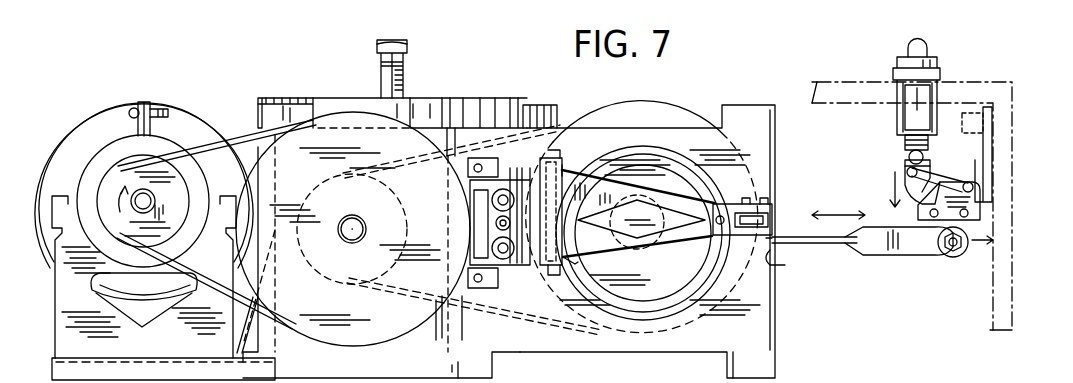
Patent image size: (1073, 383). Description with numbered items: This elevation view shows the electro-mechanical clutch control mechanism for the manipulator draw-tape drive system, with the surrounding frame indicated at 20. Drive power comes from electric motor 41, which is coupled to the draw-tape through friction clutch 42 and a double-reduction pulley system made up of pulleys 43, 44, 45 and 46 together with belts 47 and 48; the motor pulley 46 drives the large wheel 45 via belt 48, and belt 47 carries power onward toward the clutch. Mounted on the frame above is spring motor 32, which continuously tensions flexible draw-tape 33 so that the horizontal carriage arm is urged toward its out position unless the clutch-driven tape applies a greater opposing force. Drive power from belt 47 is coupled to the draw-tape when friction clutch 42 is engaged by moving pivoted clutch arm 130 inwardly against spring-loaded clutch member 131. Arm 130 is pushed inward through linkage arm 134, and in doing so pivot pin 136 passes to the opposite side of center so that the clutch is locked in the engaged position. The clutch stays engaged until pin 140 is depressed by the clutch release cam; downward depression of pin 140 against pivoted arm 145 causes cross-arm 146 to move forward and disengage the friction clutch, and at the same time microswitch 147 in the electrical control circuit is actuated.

The frame 20 is at (1005, 308).
The spring motor 32 is at (455, 108).
The flexible draw-tape 33 is at (538, 110).
The electric motor 41 is at (93, 115).
The friction clutch 42 is at (655, 165).
The pulley 43 is at (615, 118).
The pulley 44 is at (400, 220).
The pulley 45 is at (378, 318).
The pulley 46 is at (125, 168).
The belt 47 is at (527, 348).
The belt 48 is at (242, 130).
The pivoted clutch arm 130 is at (688, 238).
The spring-loaded clutch member 131 is at (602, 256).
The linkage arm 134 is at (781, 218).
The pivot pin 136 is at (770, 264).
The pin 140 is at (927, 50).
The pivoted arm 145 is at (912, 183).
The cross-arm 146 is at (918, 252).
The microswitch 147 is at (982, 207).